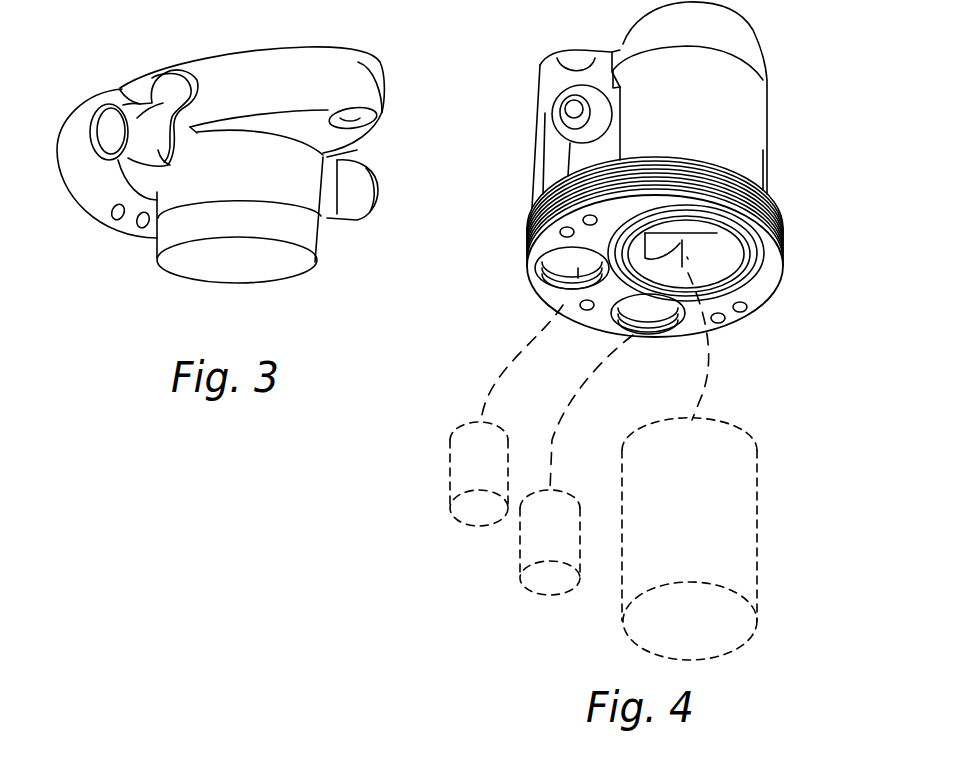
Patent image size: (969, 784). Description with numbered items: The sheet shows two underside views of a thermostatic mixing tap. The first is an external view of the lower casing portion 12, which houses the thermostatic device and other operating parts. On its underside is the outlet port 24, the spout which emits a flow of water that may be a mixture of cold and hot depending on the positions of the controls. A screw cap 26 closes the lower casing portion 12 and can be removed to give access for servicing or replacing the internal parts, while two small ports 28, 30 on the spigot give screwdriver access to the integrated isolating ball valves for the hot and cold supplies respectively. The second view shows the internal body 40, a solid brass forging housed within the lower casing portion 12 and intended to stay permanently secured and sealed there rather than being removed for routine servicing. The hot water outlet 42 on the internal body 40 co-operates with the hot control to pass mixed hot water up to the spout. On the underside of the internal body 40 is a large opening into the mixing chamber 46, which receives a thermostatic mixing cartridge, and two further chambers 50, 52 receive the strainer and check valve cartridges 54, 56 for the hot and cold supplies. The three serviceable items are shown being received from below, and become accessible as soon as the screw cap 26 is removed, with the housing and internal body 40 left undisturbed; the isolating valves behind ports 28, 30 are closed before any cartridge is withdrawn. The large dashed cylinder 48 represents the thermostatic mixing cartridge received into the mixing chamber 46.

In FIG. 3, the lower casing portion 12 is at (280, 180).
In FIG. 3, the outlet port 24 is at (353, 118).
In FIG. 3, the screw cap 26 is at (308, 232).
In FIG. 3, the port 28 is at (114, 218).
In FIG. 3, the port 30 is at (142, 228).
In FIG. 4, the internal body 40 is at (768, 93).
In FIG. 4, the hot water outlet 42 is at (577, 111).
In FIG. 4, the mixing chamber 46 is at (707, 253).
In FIG. 4, the phantom cylinder 48 is at (620, 588).
In FIG. 4, the chamber 50 is at (557, 258).
In FIG. 4, the chamber 52 is at (655, 308).
In FIG. 4, the strainer and check valve cartridge 54 is at (450, 482).
In FIG. 4, the strainer and check valve cartridge 56 is at (520, 547).